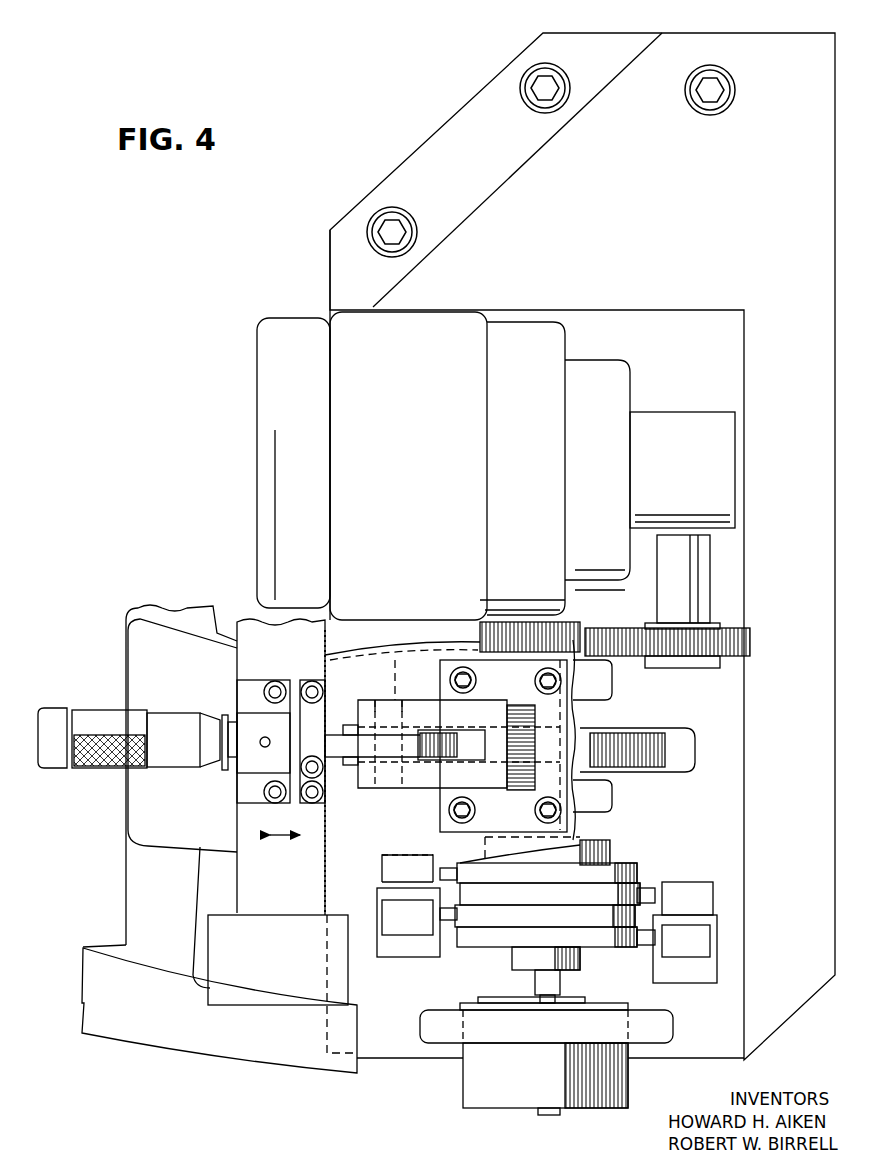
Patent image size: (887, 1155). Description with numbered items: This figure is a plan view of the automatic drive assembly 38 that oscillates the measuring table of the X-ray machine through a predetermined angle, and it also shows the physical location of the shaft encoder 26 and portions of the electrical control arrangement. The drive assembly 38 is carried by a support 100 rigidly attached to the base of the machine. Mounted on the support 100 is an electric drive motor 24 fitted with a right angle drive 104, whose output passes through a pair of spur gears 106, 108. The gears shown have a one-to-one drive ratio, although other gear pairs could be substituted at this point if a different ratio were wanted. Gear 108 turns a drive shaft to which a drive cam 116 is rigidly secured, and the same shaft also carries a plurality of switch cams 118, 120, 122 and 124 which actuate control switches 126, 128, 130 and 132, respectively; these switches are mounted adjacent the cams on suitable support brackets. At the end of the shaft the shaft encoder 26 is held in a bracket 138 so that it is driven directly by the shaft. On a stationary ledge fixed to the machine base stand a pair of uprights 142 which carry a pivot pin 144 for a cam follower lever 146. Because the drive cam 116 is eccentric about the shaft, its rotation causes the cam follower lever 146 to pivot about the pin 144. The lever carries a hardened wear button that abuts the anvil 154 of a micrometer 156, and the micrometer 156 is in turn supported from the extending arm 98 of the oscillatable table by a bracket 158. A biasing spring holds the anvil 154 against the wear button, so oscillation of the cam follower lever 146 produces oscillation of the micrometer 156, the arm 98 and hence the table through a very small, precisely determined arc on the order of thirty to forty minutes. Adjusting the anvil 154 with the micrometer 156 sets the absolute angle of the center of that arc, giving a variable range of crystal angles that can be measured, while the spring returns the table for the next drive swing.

The automatic drive assembly 38 is at (290, 266).
The support 100 is at (806, 509).
The electric drive motor 24 is at (404, 459).
The right angle drive 104 is at (735, 530).
The spur gear 108 is at (608, 660).
The spur gear 106 is at (732, 660).
The drive cam 116 is at (665, 752).
The uprights 142 is at (438, 785).
The pivot pin 144 is at (385, 704).
The cam follower lever 146 is at (455, 740).
The anvil 154 is at (333, 745).
The extending arm 98 is at (237, 893).
The bracket 158 is at (237, 718).
The micrometer 156 is at (107, 712).
The switch cam 124 is at (590, 945).
The switch cam 118 is at (635, 880).
The switch cam 122 is at (600, 920).
The switch cam 120 is at (450, 918).
The control switch 126 is at (378, 878).
The control switch 130 is at (376, 948).
The control switch 128 is at (713, 892).
The control switch 132 is at (717, 952).
The bracket 138 is at (665, 1042).
The shaft encoder 26 is at (612, 1108).